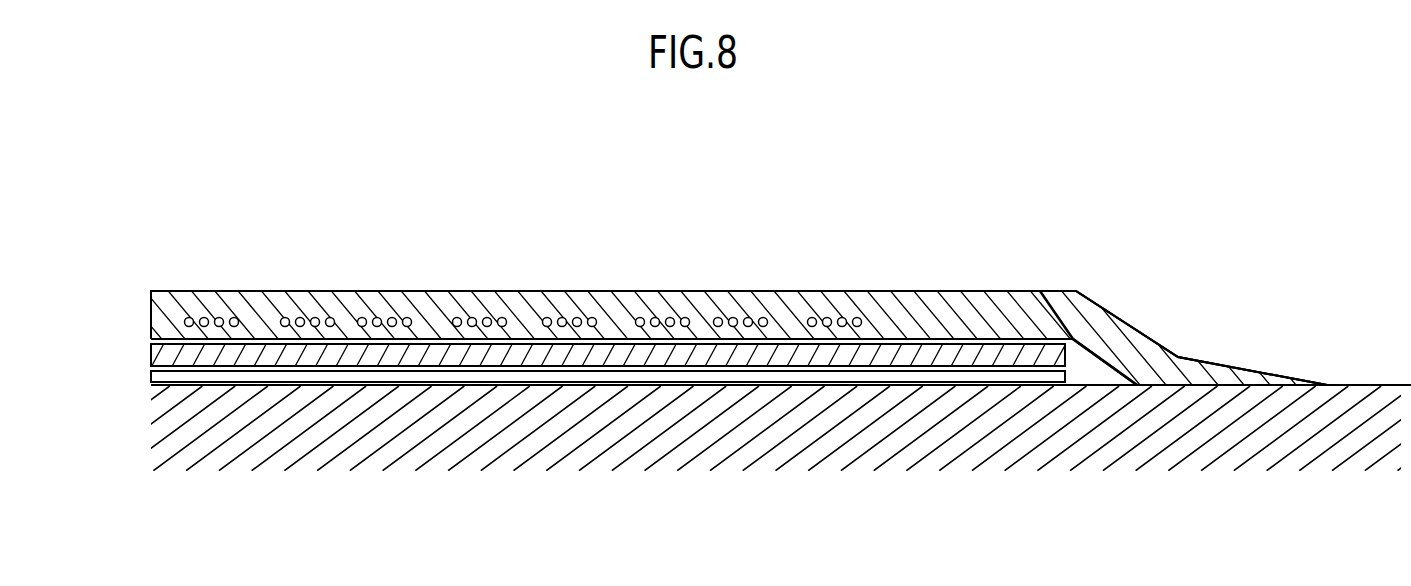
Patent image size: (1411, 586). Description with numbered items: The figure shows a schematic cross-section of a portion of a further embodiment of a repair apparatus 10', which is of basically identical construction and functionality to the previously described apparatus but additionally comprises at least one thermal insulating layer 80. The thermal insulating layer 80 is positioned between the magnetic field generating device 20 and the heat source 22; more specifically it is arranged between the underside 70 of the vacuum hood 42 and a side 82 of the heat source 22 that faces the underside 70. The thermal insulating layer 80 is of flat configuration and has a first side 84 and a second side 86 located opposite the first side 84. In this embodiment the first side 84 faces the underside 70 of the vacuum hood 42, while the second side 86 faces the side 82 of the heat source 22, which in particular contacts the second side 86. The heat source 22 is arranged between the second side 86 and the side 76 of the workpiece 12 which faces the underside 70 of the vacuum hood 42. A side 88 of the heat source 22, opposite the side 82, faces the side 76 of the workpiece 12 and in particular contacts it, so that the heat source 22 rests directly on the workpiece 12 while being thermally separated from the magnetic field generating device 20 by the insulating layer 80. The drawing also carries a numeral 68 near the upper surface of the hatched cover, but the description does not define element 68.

The repair apparatus 10' is at (781, 233).
The workpiece 12 is at (1235, 432).
The magnetic field generating device 20 is at (124, 318).
The heat source 22 is at (127, 380).
The vacuum hood 42 is at (1135, 345).
The upper surface 68 is at (711, 291).
The underside of the vacuum hood 70 is at (893, 344).
The side of the workpiece 76 is at (1112, 386).
The thermal insulating layer 80 is at (1010, 357).
The side of the heat source 82 is at (892, 370).
The first side of the thermal insulating layer 84 is at (402, 344).
The second side of the thermal insulating layer 86 is at (340, 372).
The side of the heat source 88 is at (783, 383).